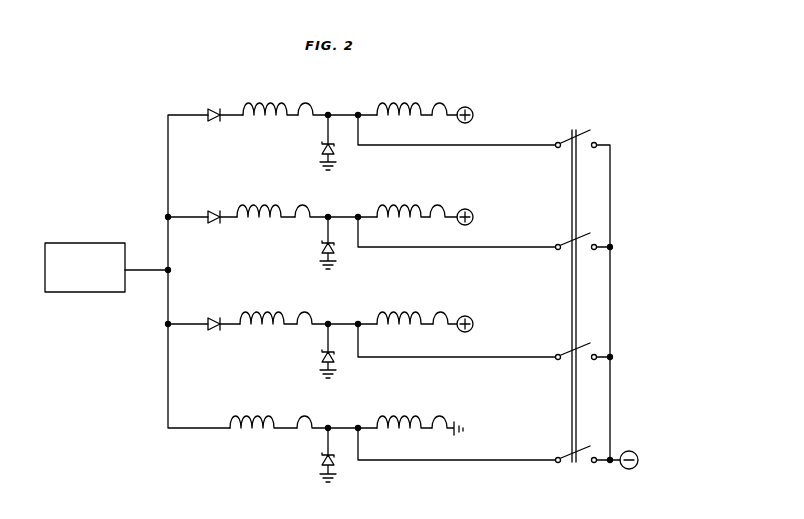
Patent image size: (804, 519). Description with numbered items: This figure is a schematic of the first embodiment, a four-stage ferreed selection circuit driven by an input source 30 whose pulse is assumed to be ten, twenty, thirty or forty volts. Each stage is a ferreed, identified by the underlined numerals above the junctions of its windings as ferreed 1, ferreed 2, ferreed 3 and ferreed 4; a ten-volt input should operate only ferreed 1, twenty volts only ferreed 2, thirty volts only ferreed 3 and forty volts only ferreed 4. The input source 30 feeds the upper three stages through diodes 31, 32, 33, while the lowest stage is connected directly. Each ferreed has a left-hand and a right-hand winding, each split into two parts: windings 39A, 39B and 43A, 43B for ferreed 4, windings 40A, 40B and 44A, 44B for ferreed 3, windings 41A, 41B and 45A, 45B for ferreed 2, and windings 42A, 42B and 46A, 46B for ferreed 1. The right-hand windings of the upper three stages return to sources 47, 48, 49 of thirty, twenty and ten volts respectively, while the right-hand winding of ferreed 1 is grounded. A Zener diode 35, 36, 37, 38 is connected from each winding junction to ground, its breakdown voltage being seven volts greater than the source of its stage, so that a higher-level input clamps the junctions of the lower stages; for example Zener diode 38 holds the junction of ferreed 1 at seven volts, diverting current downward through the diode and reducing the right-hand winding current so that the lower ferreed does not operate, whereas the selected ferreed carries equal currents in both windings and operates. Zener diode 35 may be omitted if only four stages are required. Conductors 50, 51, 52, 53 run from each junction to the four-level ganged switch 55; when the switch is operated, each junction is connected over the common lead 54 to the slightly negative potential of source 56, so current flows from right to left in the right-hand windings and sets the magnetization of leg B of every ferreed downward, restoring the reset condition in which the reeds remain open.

The ferreed 1 is at (346, 423).
The ferreed 2 is at (348, 318).
The ferreed 3 is at (346, 211).
The ferreed 4 is at (346, 110).
The input source 30 is at (97, 243).
The diode 31 is at (214, 109).
The diode 32 is at (212, 211).
The diode 33 is at (210, 318).
The Zener diode 35 is at (335, 149).
The Zener diode 36 is at (334, 251).
The Zener diode 37 is at (337, 362).
The Zener diode 38 is at (334, 462).
The winding 39A is at (270, 102).
The winding 39B is at (335, 102).
The winding 40A is at (266, 203).
The winding 40B is at (335, 203).
The winding 41A is at (268, 311).
The winding 41B is at (334, 311).
The winding 42A is at (263, 414).
The winding 42B is at (335, 414).
The winding 43A is at (441, 102).
The winding 43B is at (404, 102).
The winding 44A is at (441, 204).
The winding 44B is at (403, 204).
The winding 45A is at (441, 311).
The winding 45B is at (405, 311).
The winding 46A is at (445, 418).
The winding 46B is at (404, 414).
The source 47 is at (466, 107).
The source 48 is at (467, 209).
The source 49 is at (465, 316).
The conductor 50 is at (468, 146).
The conductor 51 is at (470, 247).
The conductor 52 is at (467, 357).
The conductor 53 is at (464, 461).
The common bus line 54 is at (612, 278).
The four-level ganged switch 55 is at (572, 277).
The source 56 is at (630, 469).